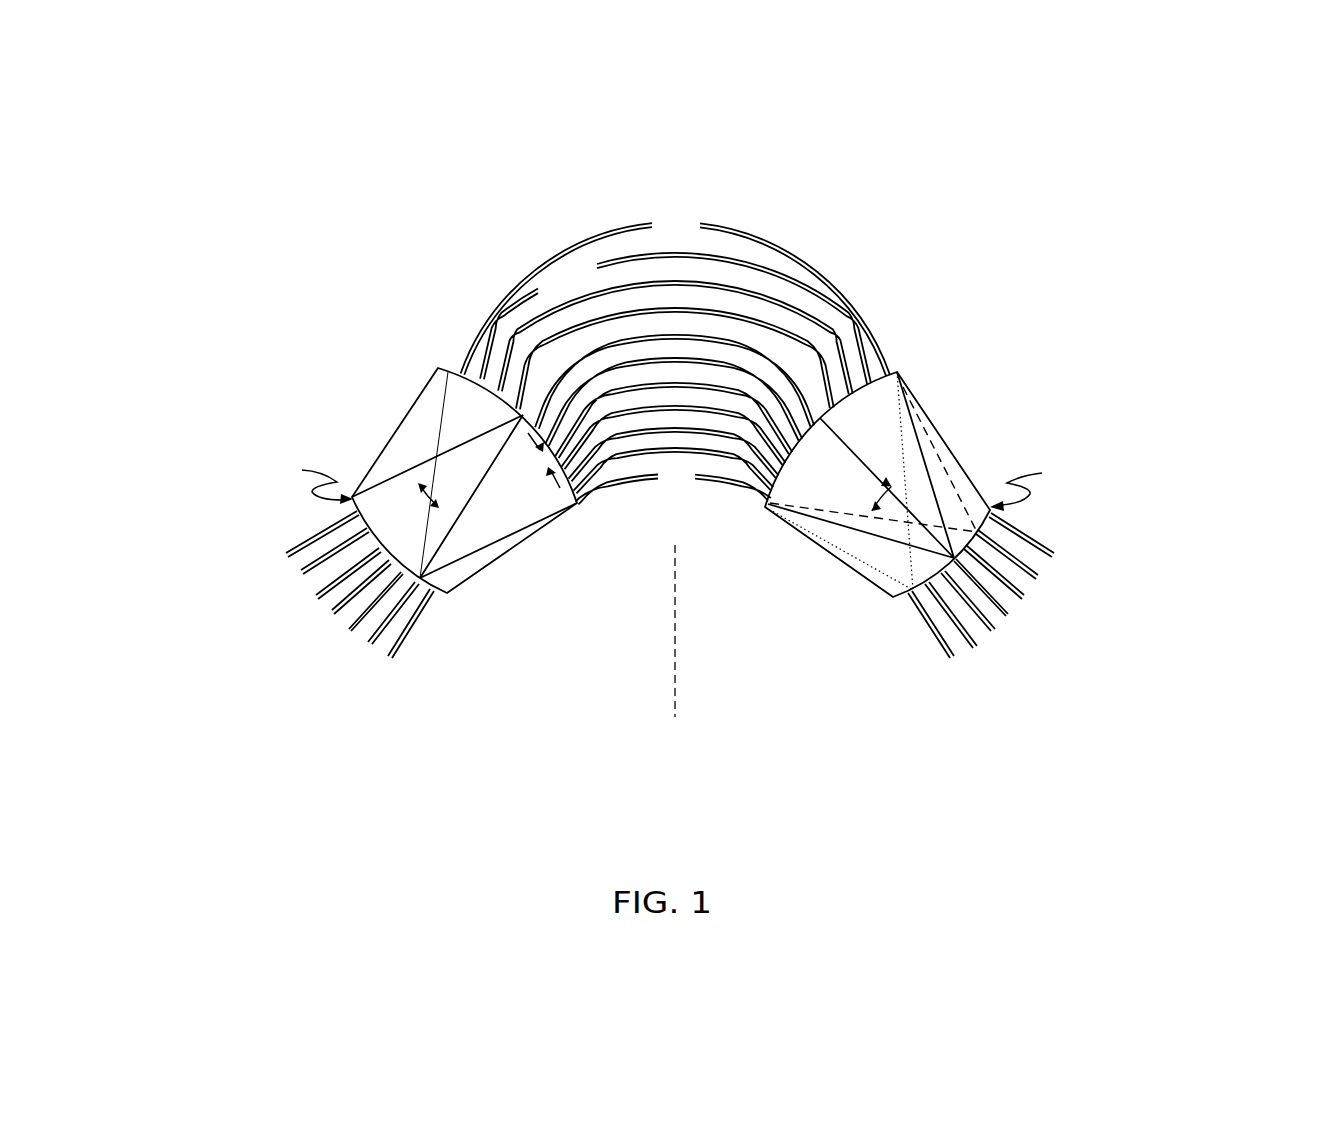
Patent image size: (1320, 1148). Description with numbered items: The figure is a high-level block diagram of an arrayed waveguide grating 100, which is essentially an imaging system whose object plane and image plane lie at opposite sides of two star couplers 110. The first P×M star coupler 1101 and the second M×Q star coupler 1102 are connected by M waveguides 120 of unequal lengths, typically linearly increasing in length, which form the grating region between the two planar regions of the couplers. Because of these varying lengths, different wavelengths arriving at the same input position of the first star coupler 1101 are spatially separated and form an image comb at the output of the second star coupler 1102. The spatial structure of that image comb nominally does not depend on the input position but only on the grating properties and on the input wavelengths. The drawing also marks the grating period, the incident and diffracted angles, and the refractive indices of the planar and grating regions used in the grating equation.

The arrayed waveguide grating 100 is at (1282, 887).
The star couplers 110 is at (671, 503).
The first P×M star coupler 1101 is at (512, 557).
The second M×Q star coupler 1102 is at (840, 563).
The waveguides 120 is at (862, 304).